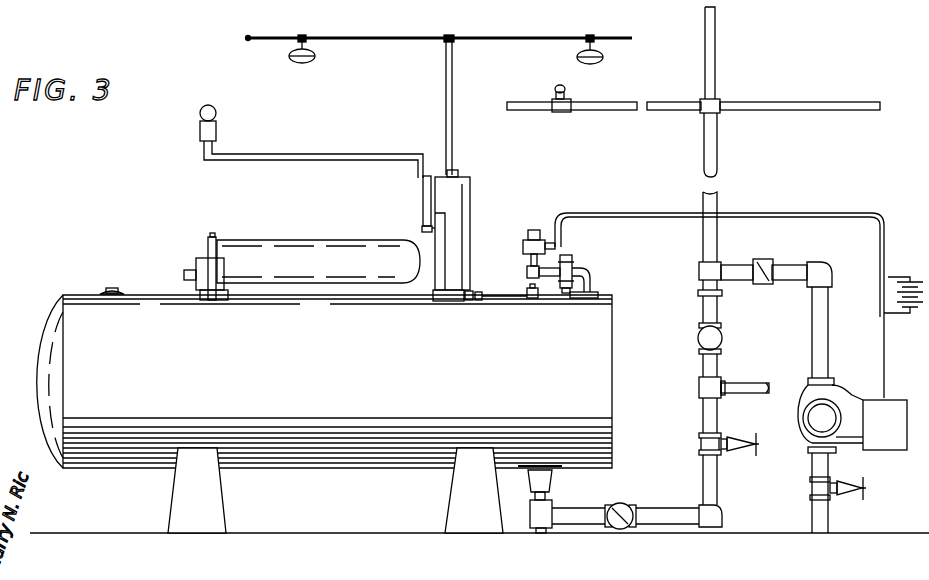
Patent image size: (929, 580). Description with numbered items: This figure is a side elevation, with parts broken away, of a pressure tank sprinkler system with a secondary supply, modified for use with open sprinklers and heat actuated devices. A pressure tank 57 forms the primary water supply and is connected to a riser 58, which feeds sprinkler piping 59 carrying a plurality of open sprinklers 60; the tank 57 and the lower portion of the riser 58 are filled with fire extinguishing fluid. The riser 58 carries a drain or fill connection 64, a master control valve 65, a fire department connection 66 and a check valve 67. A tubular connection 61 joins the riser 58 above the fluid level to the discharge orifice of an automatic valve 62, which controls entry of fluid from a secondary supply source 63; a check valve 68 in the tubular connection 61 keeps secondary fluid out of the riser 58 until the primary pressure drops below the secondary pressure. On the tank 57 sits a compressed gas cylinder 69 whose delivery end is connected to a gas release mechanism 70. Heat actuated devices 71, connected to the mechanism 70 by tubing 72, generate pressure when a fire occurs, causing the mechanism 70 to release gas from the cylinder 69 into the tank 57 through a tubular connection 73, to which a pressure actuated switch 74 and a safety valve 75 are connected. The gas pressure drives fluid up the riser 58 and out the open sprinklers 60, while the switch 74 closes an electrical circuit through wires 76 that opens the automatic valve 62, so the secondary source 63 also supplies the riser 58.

The pressure tank 57 is at (324, 410).
The riser 58 is at (705, 414).
The sprinkler piping 59 is at (633, 112).
The open sprinklers 60 is at (566, 92).
The tubular connection 61 is at (735, 266).
The automatic valve 62 is at (838, 390).
The secondary supply source 63 is at (812, 518).
The drain or fill connection 64 is at (552, 505).
The master control valve 65 is at (703, 447).
The fire department connection 66 is at (730, 385).
The check valve 67 is at (630, 505).
The check valve 68 is at (772, 260).
The compressed gas cylinder 69 is at (302, 266).
The gas release mechanism 70 is at (463, 205).
The heat actuated devices 71 is at (315, 58).
The tubing 72 is at (447, 45).
The tubular connection 73 is at (497, 292).
The pressure actuated switch 74 is at (556, 250).
The safety valve 75 is at (580, 270).
The wires 76 is at (626, 214).